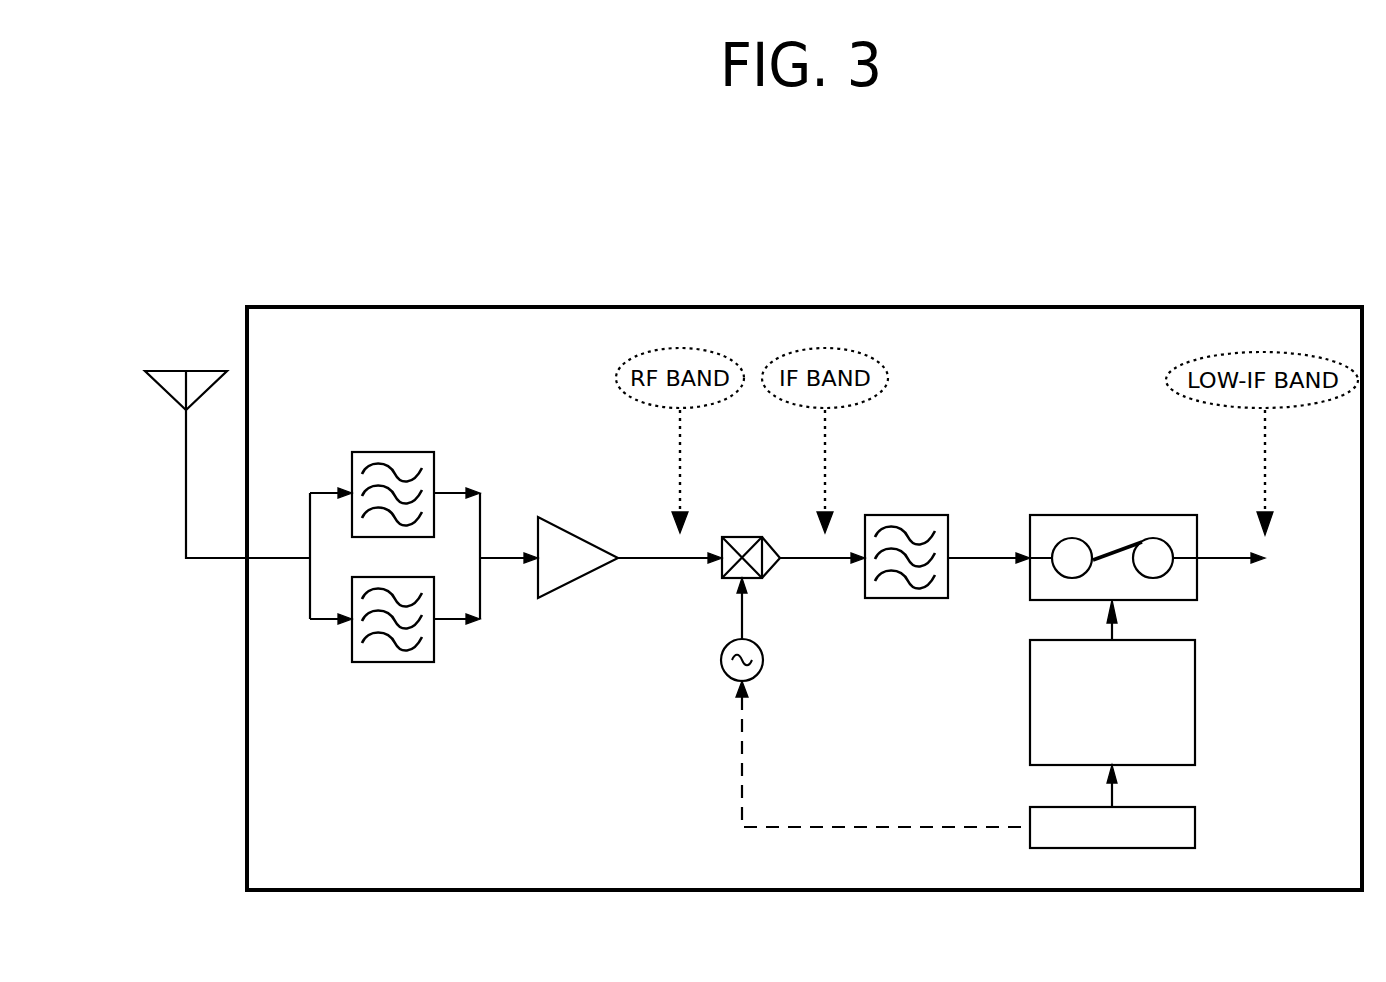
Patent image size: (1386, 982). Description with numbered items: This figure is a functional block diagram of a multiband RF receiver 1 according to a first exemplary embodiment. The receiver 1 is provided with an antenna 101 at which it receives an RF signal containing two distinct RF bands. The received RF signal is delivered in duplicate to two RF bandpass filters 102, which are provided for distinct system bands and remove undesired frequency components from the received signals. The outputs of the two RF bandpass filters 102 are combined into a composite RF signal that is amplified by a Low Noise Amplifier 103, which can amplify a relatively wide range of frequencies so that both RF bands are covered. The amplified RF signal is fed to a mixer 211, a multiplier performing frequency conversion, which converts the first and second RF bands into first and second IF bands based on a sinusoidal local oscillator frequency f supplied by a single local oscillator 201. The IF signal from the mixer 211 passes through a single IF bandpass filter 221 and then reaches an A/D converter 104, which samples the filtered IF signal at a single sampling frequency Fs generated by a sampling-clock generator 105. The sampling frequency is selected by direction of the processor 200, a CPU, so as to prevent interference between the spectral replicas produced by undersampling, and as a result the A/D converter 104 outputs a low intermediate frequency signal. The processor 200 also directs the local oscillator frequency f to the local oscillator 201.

The receiver 1 is at (1217, 308).
The antenna 101 is at (163, 370).
The RF bandpass filter 102 is at (377, 451).
The Low Noise Amplifier 103 is at (578, 533).
The A/D converter 104 is at (1172, 515).
The sampling-clock generator 105 is at (1030, 672).
The processor 200 is at (1030, 805).
The local oscillator 201 is at (720, 672).
The mixer 211 is at (720, 503).
The IF bandpass filter 221 is at (890, 513).